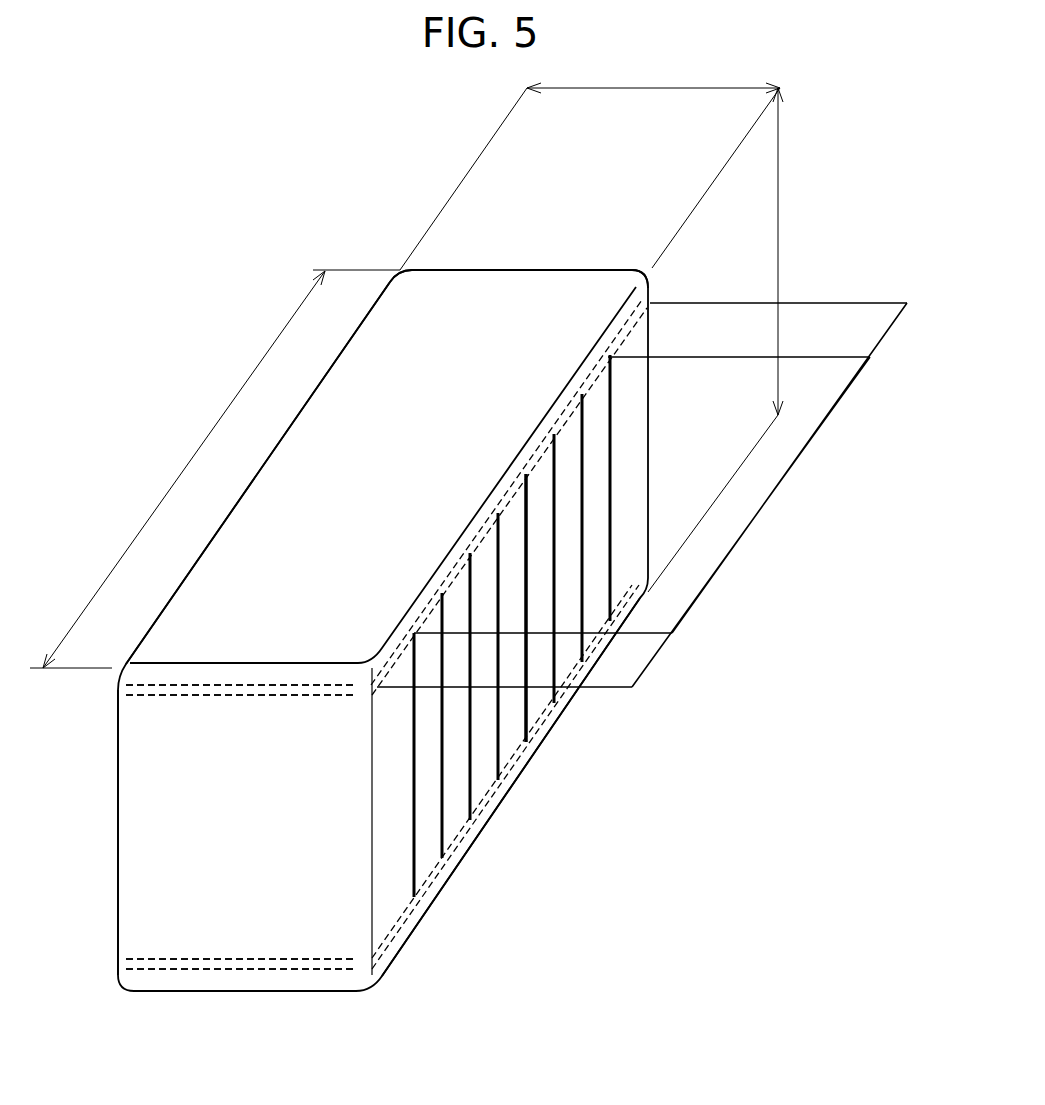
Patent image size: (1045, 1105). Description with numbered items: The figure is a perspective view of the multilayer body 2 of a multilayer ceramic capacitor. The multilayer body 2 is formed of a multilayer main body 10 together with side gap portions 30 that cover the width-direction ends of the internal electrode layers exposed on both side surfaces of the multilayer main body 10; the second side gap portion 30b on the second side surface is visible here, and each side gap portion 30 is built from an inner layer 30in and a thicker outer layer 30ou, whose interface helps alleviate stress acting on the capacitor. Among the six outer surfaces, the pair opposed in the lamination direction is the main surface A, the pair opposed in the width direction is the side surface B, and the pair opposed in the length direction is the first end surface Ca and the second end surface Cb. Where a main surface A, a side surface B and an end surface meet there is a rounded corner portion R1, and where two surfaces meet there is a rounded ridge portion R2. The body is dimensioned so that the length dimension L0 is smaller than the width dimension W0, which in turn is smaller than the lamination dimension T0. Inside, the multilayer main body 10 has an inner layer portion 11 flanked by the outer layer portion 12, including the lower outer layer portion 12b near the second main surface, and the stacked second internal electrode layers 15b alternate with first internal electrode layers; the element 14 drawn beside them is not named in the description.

The multilayer body 2 is at (693, 148).
The multilayer main body 10 is at (594, 287).
The side gap portion 30 is at (648, 290).
The second side gap portion 30b is at (468, 848).
The inner layer 30in is at (206, 963).
The outer layer 30ou is at (289, 982).
The electrode laminate 14 is at (508, 742).
The second internal electrode layer 15b is at (527, 702).
The inner layer portion 11 is at (753, 530).
The outer layer portion 12 is at (868, 357).
The lower outer layer portion 12b is at (632, 687).
The dimension in the length direction L0 is at (590, 165).
The dimension in the width direction W0 is at (736, 340).
The dimension in the lamination direction T0 is at (215, 469).
The corner portion R1 is at (405, 271).
The ridge portion R2 is at (467, 270).
The main surface A is at (500, 270).
The side surface B is at (320, 478).
The first end surface Ca is at (118, 830).
The second end surface Cb is at (480, 782).